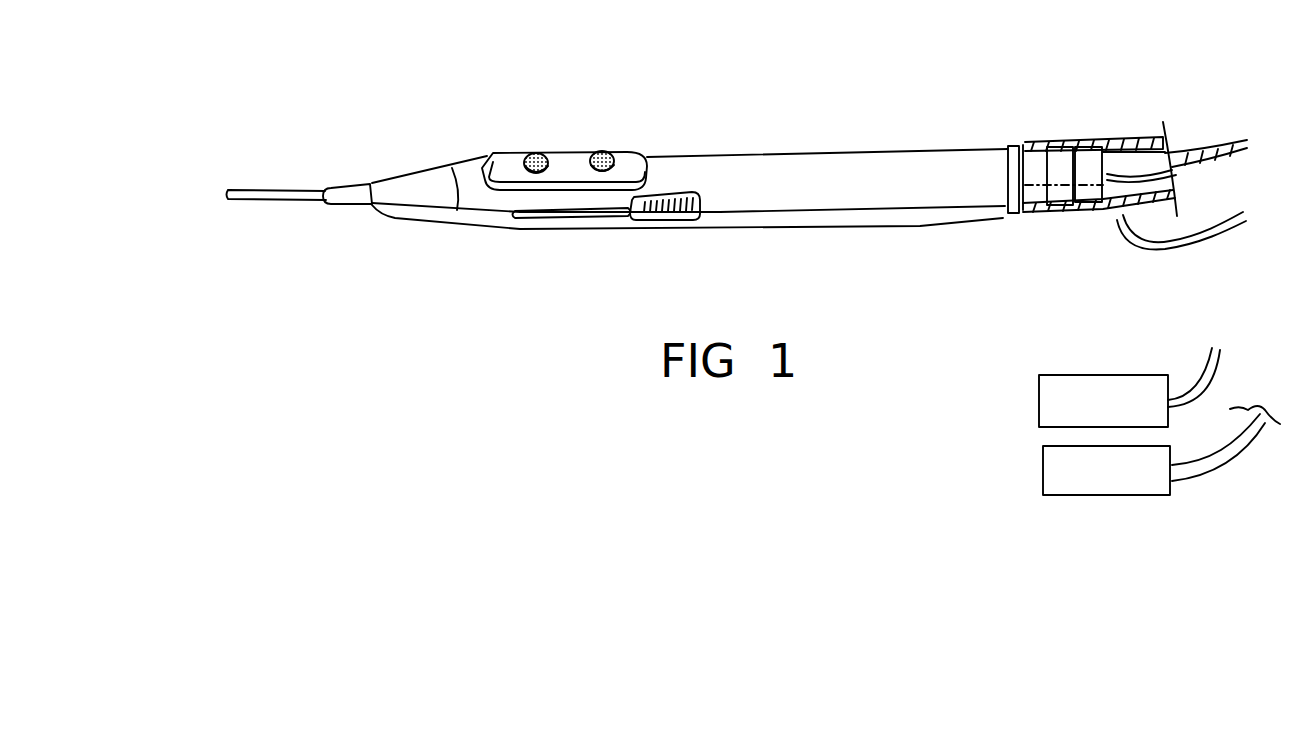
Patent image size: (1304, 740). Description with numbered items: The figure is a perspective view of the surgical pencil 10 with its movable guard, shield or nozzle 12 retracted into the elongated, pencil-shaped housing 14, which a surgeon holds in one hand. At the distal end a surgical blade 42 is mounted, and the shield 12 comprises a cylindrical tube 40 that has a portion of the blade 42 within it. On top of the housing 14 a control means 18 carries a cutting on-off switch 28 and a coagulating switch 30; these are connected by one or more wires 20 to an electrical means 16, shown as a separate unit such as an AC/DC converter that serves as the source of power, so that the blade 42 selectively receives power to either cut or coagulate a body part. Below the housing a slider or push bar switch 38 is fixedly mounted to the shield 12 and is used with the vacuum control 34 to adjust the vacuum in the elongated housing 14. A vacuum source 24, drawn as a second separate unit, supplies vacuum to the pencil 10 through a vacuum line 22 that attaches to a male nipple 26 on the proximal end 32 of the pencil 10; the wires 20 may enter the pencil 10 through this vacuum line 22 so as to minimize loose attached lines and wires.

The surgical pencil 10 is at (905, 96).
The movable guard/shield/nozzle 12 is at (347, 185).
The elongated, pencil-shaped housing 14 is at (742, 153).
The electrical means / source of power 16 is at (1097, 375).
The control means 18 is at (562, 95).
The wires 20 is at (1203, 142).
The vacuum line 22 is at (1100, 138).
The vacuum source 24 is at (1030, 469).
The male nipple 26 is at (1062, 160).
The cutting on-off switch 28 is at (530, 152).
The coagulating switch 30 is at (603, 150).
The proximal end 32 is at (1000, 243).
The vacuum control 34 is at (660, 241).
The slider / push bar switch 38 is at (690, 218).
The cylindrical tube 40 is at (355, 206).
The surgical blade 42 is at (277, 205).